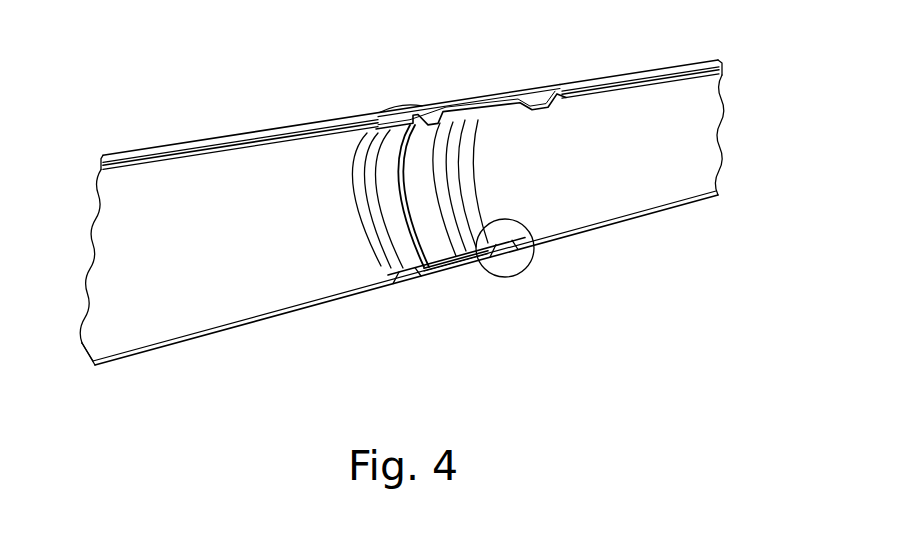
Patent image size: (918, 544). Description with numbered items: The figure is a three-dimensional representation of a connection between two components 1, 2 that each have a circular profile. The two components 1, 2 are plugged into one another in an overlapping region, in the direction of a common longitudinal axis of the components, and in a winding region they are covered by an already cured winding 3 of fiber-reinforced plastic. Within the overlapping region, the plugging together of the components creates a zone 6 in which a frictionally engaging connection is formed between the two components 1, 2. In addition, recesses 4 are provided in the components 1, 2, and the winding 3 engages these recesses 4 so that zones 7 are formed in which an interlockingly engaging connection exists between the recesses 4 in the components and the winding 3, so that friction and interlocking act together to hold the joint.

The component 1 is at (253, 138).
The component 2 is at (627, 78).
The winding 3 is at (486, 192).
The recesses 4 is at (410, 280).
The zone 6 is at (440, 277).
The zones 7 is at (537, 253).